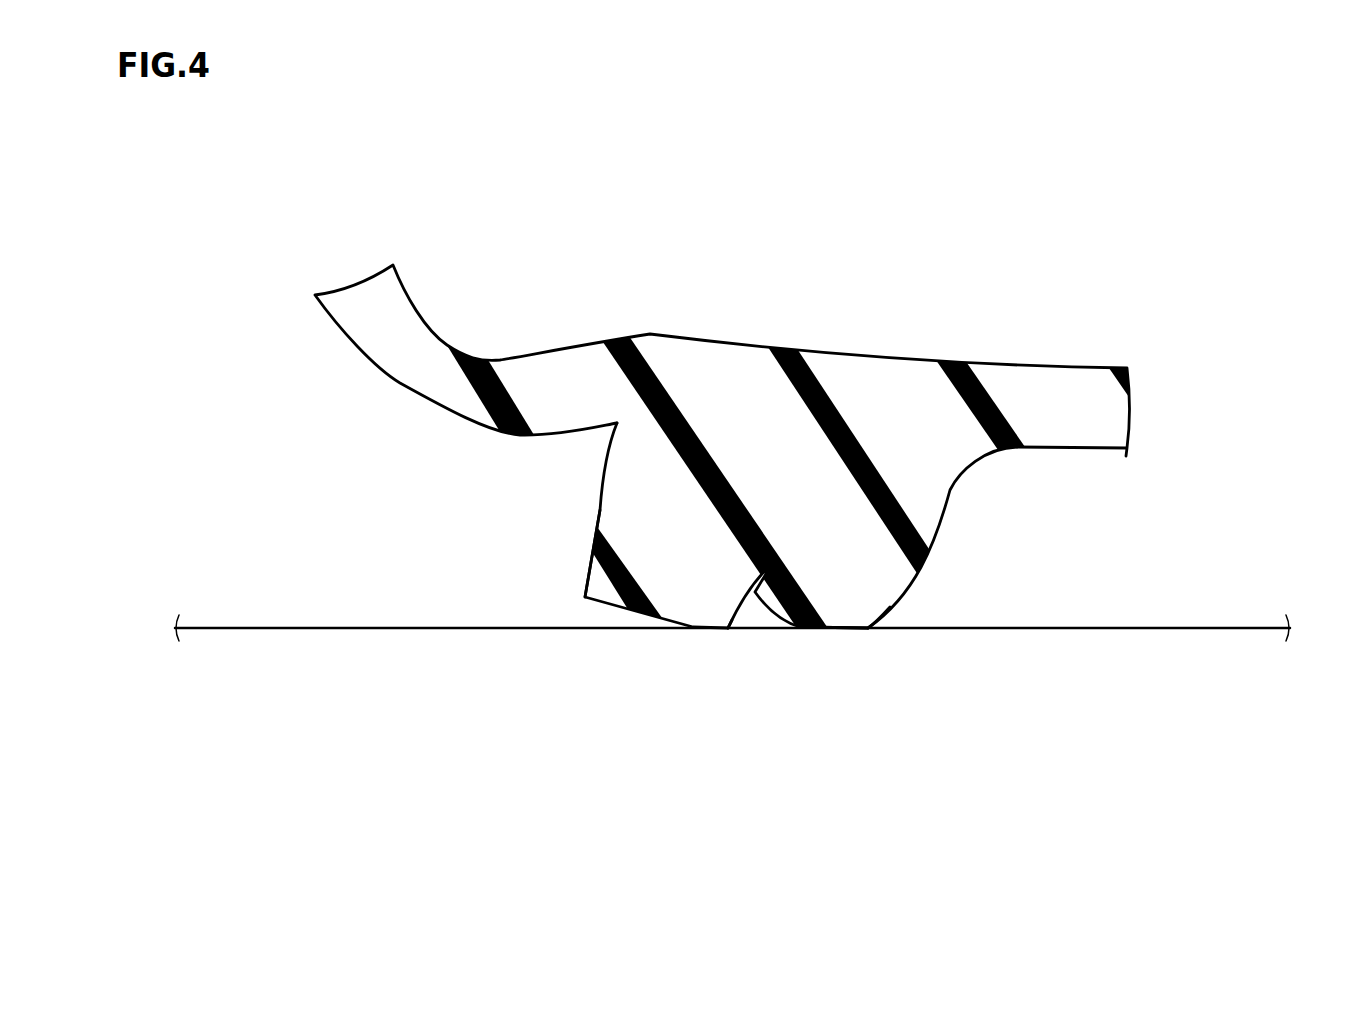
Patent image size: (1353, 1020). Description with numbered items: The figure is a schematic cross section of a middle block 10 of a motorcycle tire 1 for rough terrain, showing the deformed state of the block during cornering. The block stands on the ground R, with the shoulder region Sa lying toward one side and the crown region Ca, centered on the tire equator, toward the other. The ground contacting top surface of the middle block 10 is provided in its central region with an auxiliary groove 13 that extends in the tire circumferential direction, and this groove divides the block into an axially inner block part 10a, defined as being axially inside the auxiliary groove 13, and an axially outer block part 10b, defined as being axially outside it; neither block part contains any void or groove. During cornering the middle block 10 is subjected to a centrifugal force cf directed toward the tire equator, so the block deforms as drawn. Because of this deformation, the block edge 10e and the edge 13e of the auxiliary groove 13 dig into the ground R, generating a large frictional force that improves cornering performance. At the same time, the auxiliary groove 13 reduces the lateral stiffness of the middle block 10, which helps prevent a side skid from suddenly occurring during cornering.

The motorcycle tire 1 is at (938, 319).
The middle block 10 is at (570, 460).
The axially inner block part 10a is at (835, 602).
The axially outer block part 10b is at (620, 545).
The block edge 10e is at (868, 628).
The auxiliary groove 13 is at (750, 612).
The edge of the auxiliary groove 13e is at (730, 628).
The ground R is at (1148, 627).
The shoulder region Sa is at (300, 221).
The crown region Ca is at (1157, 221).
The centrifugal force cf is at (685, 820).